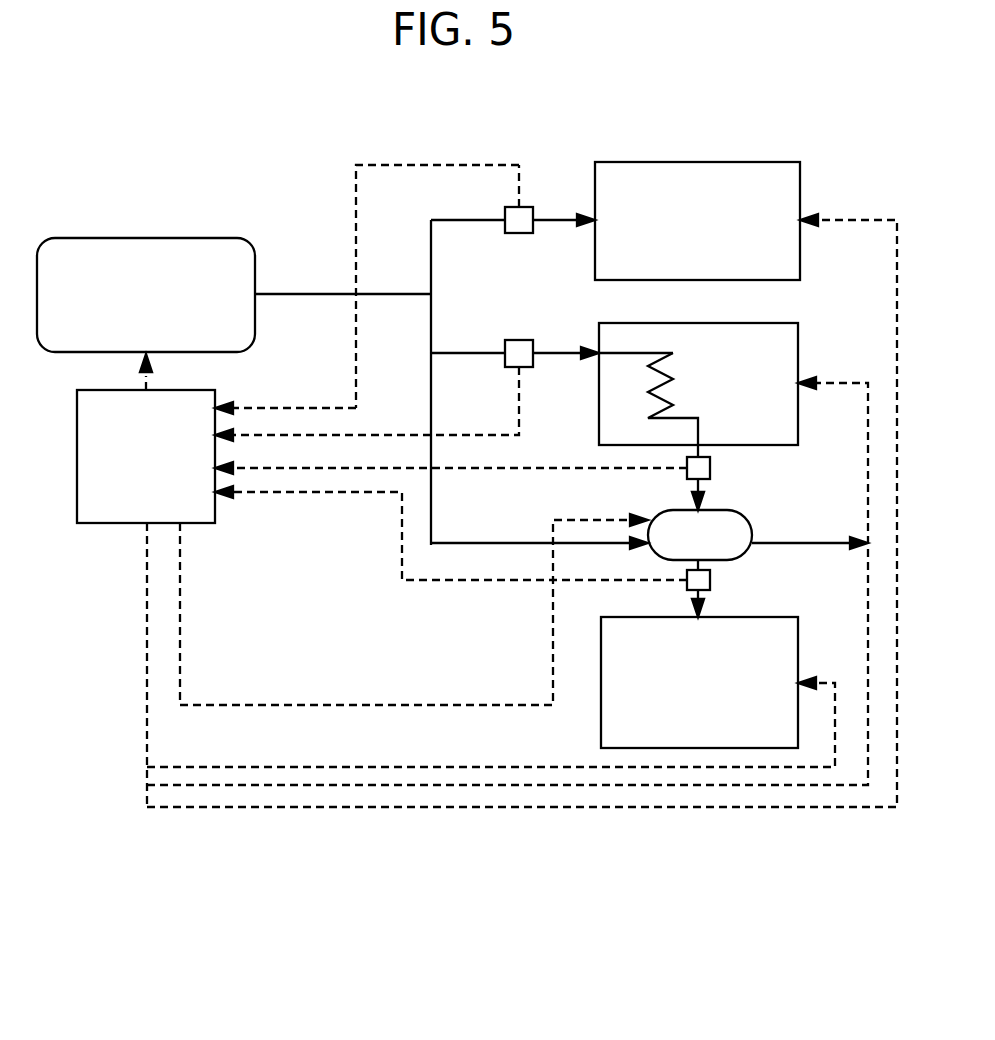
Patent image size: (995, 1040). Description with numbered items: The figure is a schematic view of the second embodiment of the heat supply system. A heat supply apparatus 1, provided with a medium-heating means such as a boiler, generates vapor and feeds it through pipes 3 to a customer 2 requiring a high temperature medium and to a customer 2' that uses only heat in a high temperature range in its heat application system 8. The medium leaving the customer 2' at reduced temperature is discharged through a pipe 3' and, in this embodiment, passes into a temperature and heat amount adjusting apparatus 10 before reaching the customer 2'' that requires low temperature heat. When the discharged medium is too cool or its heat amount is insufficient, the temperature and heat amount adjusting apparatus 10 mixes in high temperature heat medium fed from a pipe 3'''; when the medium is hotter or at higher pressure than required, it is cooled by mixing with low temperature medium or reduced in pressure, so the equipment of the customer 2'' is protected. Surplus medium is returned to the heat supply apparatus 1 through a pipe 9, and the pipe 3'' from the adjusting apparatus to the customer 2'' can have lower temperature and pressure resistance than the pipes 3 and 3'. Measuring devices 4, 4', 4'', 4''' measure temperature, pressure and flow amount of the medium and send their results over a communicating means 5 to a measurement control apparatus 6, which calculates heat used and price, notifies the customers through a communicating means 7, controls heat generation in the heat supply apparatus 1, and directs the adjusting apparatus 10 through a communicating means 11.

The heat supply apparatus 1 is at (165, 238).
The customer 2 is at (697, 186).
The customer 2' is at (732, 384).
The customer 2'' is at (660, 682).
The pipe 3 is at (464, 379).
The pipe 3' is at (736, 460).
The pipe 3'' is at (650, 569).
The pipe 3''' is at (539, 518).
The measuring device 4 is at (444, 286).
The measuring device 4' is at (389, 362).
The measuring device 4'' is at (503, 483).
The measuring device 4''' is at (507, 554).
The communicating means 5 is at (297, 408).
The measurement control apparatus 6 is at (107, 523).
The communicating means 7 is at (255, 767).
The heat application system 8 is at (668, 367).
The pipe 9 is at (815, 548).
The temperature and heat amount adjusting apparatus 10 is at (752, 520).
The communicating means 11 is at (298, 705).